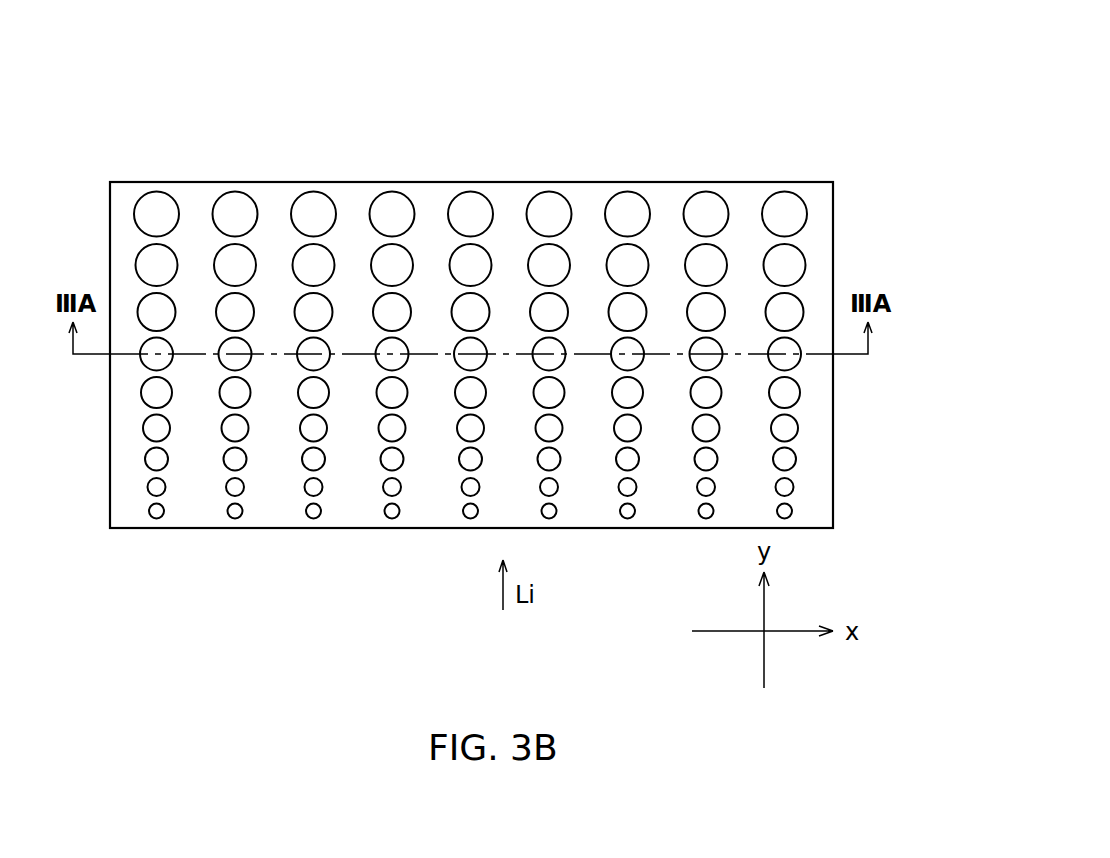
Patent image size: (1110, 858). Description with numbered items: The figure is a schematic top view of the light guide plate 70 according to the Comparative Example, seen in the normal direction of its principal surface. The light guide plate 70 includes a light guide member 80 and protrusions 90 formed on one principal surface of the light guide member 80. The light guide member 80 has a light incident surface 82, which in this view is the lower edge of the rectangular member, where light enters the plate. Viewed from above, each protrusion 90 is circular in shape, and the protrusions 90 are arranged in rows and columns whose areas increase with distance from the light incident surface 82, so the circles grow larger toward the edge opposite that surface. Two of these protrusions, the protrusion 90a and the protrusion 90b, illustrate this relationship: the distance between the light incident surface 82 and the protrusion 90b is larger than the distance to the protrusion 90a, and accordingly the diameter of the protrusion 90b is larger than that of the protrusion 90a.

The light guide plate 70 is at (698, 120).
The light guide member 80 is at (400, 148).
The light incident surface 82 is at (220, 528).
The protrusions 90 is at (470, 192).
The protrusion 90a is at (806, 261).
The protrusion 90b is at (807, 213).